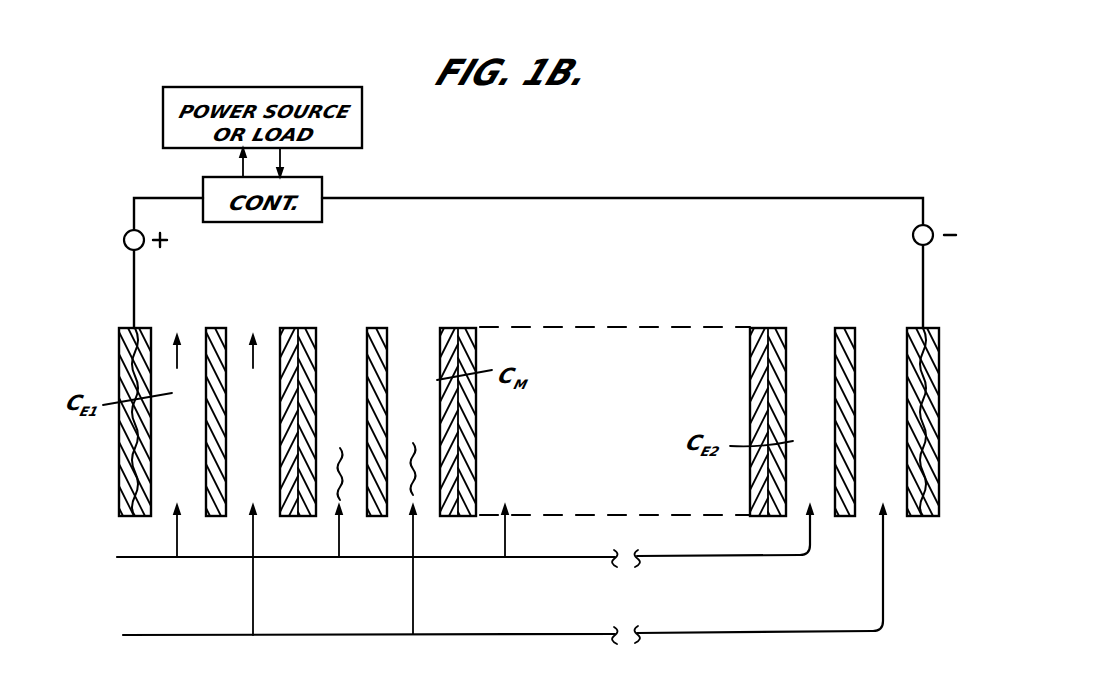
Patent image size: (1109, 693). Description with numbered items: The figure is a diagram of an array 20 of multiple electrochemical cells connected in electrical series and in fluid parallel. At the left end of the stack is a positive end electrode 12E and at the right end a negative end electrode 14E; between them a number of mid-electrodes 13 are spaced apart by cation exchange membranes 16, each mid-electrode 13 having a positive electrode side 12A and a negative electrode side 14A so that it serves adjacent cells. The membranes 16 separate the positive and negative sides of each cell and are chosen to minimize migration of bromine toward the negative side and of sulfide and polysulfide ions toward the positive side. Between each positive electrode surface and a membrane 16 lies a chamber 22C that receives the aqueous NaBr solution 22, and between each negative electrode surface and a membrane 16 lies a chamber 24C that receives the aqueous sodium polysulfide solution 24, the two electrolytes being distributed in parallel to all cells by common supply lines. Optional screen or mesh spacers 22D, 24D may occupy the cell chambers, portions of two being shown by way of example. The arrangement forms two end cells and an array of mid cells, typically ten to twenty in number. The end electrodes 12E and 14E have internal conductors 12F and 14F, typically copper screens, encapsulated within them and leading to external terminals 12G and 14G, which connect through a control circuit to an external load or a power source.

The external terminal 12G is at (124, 238).
The internal conductor 12F is at (133, 292).
The end electrode 12E is at (119, 356).
The cation exchange membrane 16 is at (215, 328).
The mid-electrode 13 is at (530, 383).
The negative electrode side 14A is at (282, 328).
The positive electrode side 12A is at (312, 328).
The array 20 is at (506, 266).
The chamber 22C is at (264, 380).
The chamber 24C is at (336, 380).
The screen or mesh spacer 22D is at (340, 468).
The screen or mesh spacer 24D is at (413, 470).
The external terminal 14G is at (913, 238).
The internal conductor 14F is at (923, 272).
The end electrode 14E is at (907, 328).
The aqueous solution of NaBr 22 is at (443, 549).
The aqueous solution of Na2Sx 24 is at (480, 591).